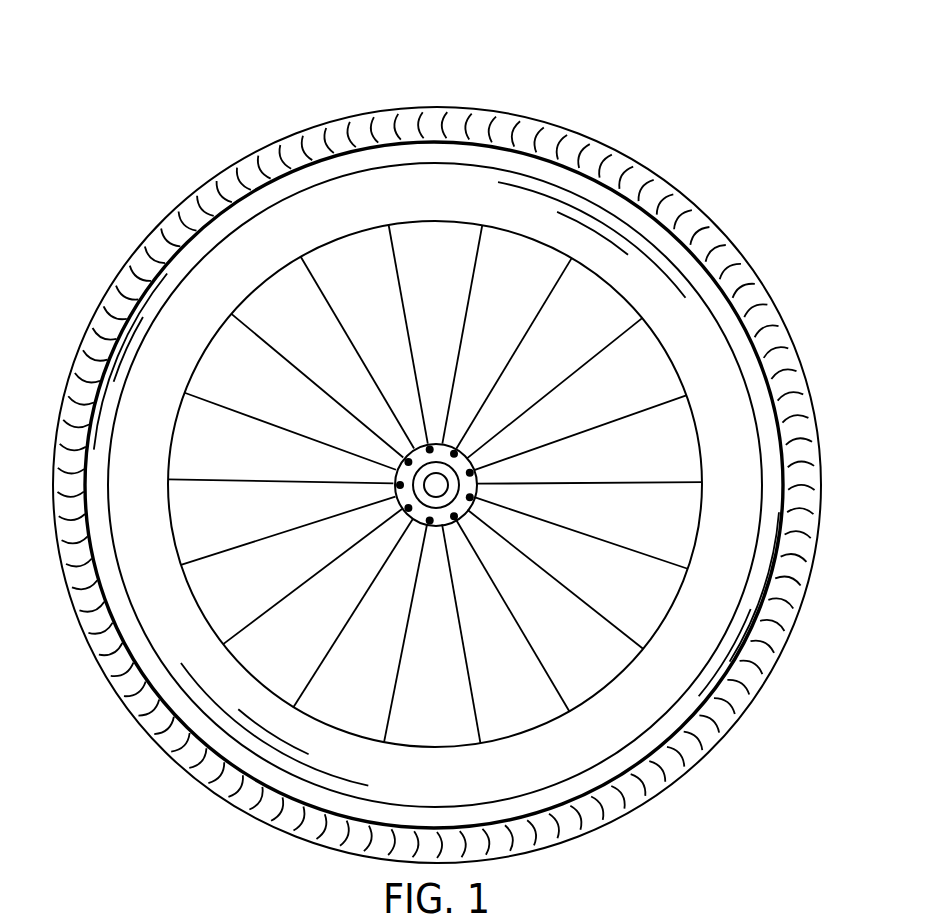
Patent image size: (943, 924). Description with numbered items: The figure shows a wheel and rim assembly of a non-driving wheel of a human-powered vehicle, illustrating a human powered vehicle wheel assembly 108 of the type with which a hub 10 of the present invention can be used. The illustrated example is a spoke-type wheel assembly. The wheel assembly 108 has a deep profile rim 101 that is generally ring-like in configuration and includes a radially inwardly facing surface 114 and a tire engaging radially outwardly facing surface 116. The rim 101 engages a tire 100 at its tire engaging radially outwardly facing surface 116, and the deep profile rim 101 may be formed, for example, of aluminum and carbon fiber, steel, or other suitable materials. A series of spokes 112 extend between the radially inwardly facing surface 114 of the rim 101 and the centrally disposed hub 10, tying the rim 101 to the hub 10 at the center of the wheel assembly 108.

The wheel assembly 108 is at (400, 80).
The tire 100 is at (656, 173).
The tire engaging radially outwardly facing surface 116 is at (733, 274).
The deep profile rim 101 is at (242, 263).
The radially inwardly facing surface 114 is at (521, 235).
The spokes 112 is at (574, 534).
The hub 10 is at (392, 515).